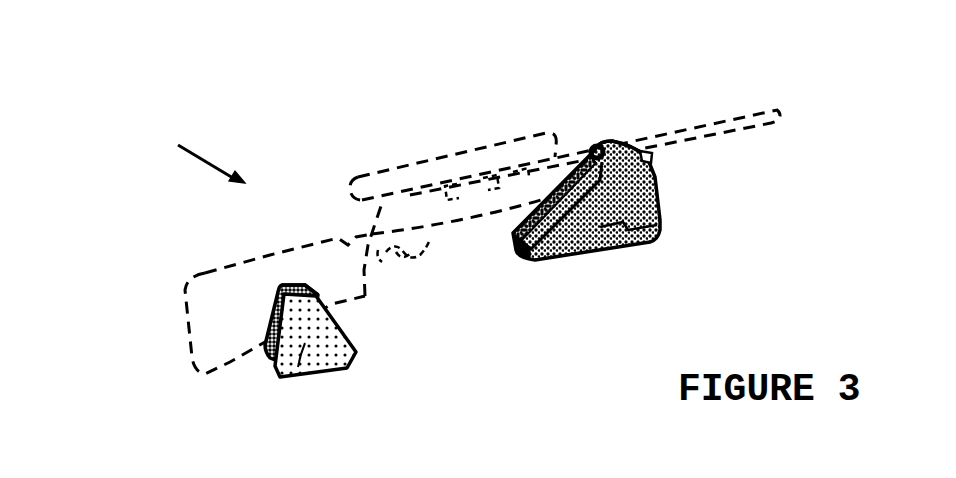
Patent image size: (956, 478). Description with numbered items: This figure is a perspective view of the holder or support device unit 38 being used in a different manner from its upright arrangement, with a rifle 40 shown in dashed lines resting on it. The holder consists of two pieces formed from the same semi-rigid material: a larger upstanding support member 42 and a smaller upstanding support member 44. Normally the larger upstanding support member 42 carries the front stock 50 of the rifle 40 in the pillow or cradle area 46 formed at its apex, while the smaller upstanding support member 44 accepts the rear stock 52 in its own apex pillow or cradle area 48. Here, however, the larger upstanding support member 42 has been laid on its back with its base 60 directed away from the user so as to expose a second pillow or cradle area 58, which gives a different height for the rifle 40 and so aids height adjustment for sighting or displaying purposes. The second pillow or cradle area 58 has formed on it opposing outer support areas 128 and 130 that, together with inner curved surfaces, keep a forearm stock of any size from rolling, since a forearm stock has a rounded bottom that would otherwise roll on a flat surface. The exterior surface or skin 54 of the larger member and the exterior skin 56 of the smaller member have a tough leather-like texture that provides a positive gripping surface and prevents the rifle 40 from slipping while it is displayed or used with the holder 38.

The holder or support device unit 38 is at (181, 152).
The rifle 40 is at (262, 259).
The larger upstanding support member 42 is at (600, 253).
The smaller upstanding support member 44 is at (339, 318).
The pillow or cradle area 46 is at (518, 243).
The pillow or cradle area 48 is at (307, 287).
The front stock 50 is at (653, 153).
The rear stock 52 is at (223, 319).
The exterior surface or skin 54 is at (660, 220).
The exterior skin 56 is at (303, 378).
The second pillow or cradle area 58 is at (615, 142).
The base 60 is at (660, 197).
The opposing outer support area 128 is at (640, 135).
The opposing outer support area 130 is at (597, 143).